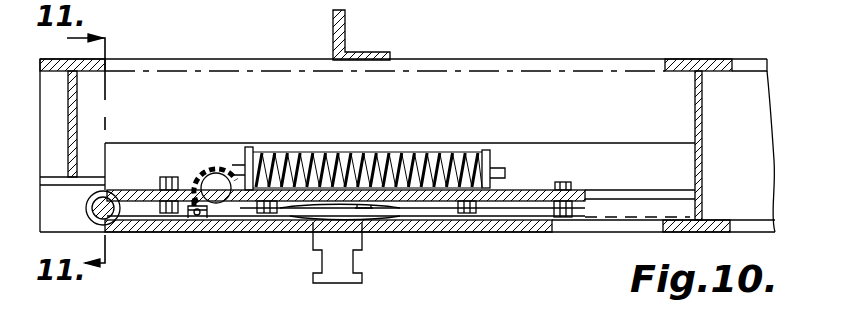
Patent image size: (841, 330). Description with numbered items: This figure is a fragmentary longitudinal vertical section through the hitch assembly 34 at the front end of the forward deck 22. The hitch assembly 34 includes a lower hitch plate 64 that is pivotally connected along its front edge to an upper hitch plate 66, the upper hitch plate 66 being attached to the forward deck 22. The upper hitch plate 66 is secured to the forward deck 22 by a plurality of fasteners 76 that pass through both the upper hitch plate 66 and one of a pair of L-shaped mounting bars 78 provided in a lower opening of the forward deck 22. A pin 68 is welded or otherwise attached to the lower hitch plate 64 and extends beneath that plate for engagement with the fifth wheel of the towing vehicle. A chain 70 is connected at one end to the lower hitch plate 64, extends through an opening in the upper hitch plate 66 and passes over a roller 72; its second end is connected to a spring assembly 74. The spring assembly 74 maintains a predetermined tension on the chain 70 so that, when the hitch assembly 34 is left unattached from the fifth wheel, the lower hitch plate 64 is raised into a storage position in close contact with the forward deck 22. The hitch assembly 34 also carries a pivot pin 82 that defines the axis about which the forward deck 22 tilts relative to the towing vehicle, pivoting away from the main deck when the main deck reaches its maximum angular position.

The forward deck 22 is at (585, 64).
The hitch assembly 34 is at (233, 233).
The lower hitch plate 64 is at (523, 233).
The upper hitch plate 66 is at (532, 198).
The pin 68 is at (348, 268).
The chain 70 is at (223, 170).
The roller 72 is at (200, 172).
The spring assembly 74 is at (392, 147).
The fasteners 76 is at (564, 219).
The L-shaped mounting bars 78 is at (602, 157).
The pivot pin 82 is at (87, 209).